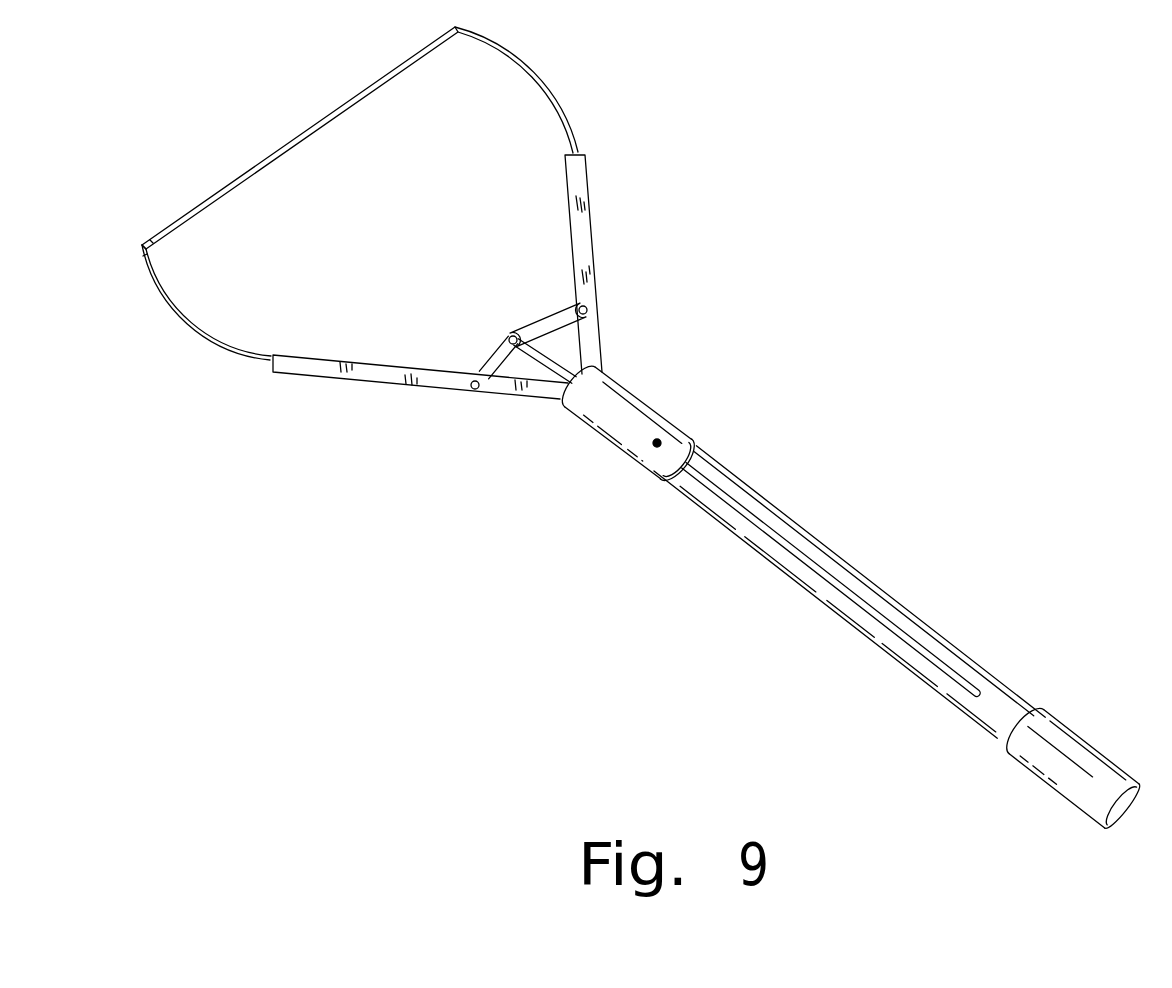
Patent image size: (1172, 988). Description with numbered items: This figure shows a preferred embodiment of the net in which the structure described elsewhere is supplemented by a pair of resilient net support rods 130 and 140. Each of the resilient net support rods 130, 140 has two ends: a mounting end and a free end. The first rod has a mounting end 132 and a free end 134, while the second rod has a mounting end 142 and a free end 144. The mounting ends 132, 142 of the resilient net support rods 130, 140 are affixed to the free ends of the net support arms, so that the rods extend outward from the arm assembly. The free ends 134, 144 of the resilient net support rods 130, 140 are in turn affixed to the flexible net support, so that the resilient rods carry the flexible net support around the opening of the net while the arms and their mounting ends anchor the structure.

The resilient net support rod 130 is at (570, 95).
The mounting end 132 is at (600, 138).
The free end 134 is at (505, 29).
The resilient net support rod 140 is at (160, 329).
The mounting end 142 is at (259, 375).
The free end 144 is at (132, 241).